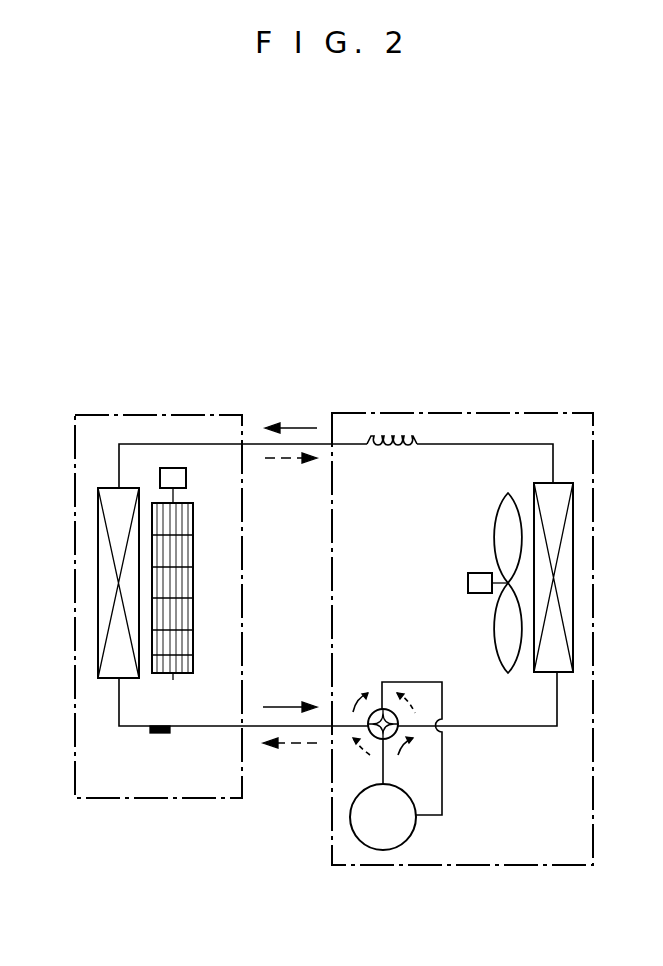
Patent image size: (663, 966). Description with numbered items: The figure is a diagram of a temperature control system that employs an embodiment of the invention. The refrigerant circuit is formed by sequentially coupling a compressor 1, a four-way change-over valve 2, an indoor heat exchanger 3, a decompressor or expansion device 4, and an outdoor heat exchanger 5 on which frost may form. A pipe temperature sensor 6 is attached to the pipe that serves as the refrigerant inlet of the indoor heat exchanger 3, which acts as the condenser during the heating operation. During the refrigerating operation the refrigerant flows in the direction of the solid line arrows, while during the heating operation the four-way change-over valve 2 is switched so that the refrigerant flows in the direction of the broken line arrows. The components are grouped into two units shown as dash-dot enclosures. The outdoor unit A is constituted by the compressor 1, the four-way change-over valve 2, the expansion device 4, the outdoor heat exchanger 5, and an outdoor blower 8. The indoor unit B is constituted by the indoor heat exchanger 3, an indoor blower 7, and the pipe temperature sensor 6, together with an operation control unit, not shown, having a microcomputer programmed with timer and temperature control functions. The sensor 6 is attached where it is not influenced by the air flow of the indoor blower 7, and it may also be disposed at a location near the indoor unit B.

The compressor 1 is at (412, 835).
The four-way change-over valve 2 is at (385, 710).
The indoor heat exchanger 3 is at (98, 630).
The expansion device 4 is at (405, 450).
The outdoor heat exchanger 5 is at (573, 573).
The pipe temperature sensor 6 is at (161, 725).
The indoor blower 7 is at (186, 478).
The outdoor blower 8 is at (468, 583).
The outdoor unit A is at (460, 866).
The indoor unit B is at (130, 800).